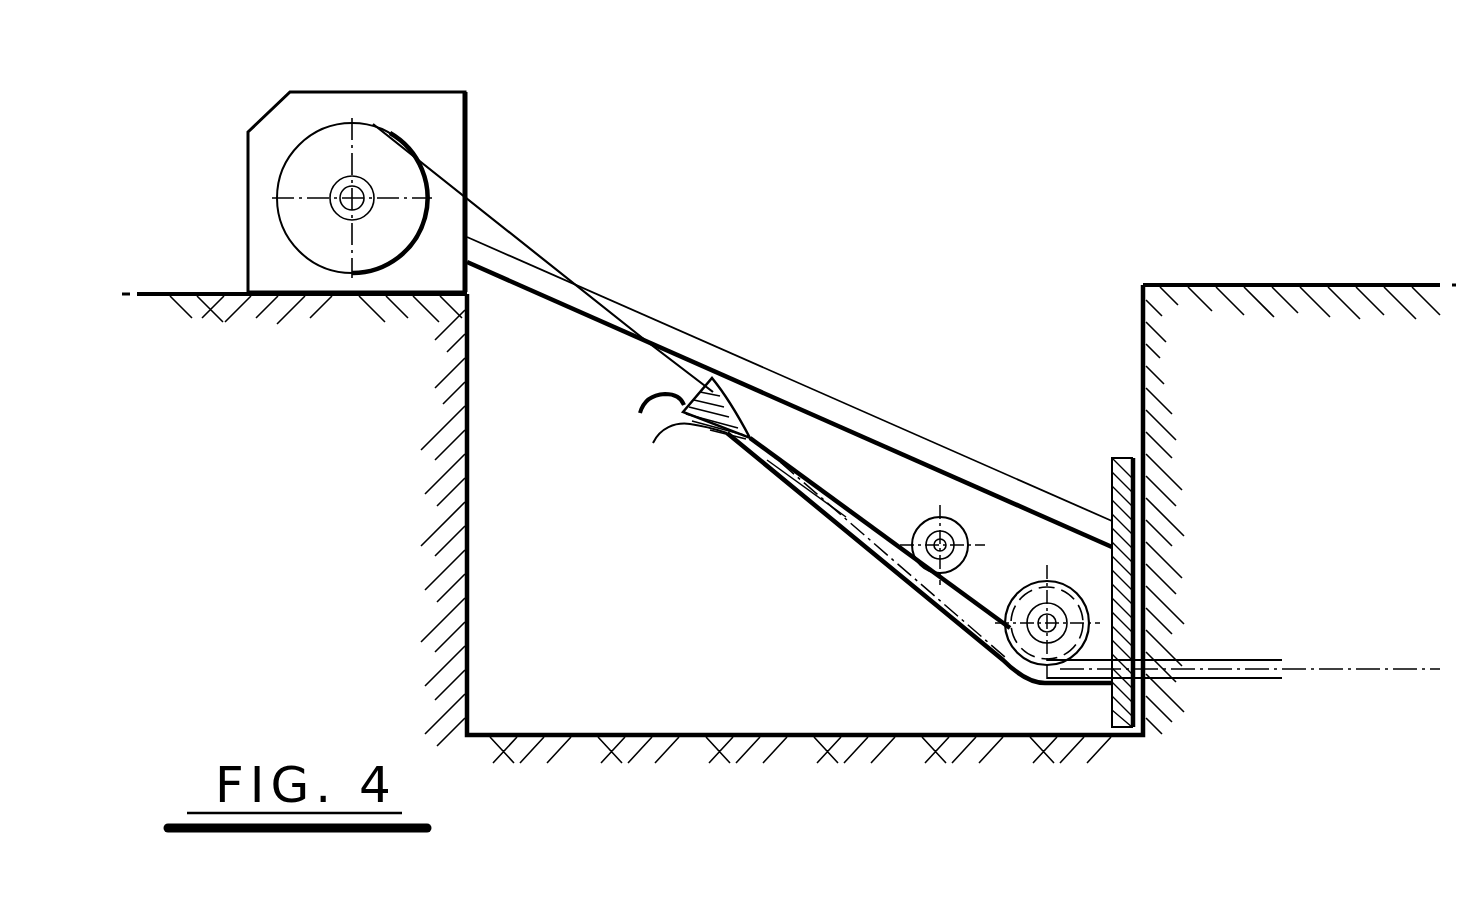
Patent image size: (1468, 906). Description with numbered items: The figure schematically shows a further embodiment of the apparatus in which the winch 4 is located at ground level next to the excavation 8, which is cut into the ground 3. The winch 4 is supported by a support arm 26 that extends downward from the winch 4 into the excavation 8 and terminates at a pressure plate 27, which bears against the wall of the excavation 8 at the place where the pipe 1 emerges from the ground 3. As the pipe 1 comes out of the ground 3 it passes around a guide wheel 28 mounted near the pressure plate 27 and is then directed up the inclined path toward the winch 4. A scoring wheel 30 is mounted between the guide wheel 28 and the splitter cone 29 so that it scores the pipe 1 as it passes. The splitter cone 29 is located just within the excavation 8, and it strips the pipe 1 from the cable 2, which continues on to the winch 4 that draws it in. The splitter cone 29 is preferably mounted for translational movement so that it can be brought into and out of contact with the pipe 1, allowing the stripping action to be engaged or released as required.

The pipe 1 is at (1235, 669).
The cable 2 is at (535, 253).
The ground 3 is at (377, 440).
The winch 4 is at (373, 125).
The excavation 8 is at (800, 660).
The support arm 26 is at (836, 418).
The pressure plate 27 is at (1118, 457).
The guide wheel 28 is at (1062, 605).
The splitter cone 29 is at (680, 394).
The scoring wheel 30 is at (950, 527).